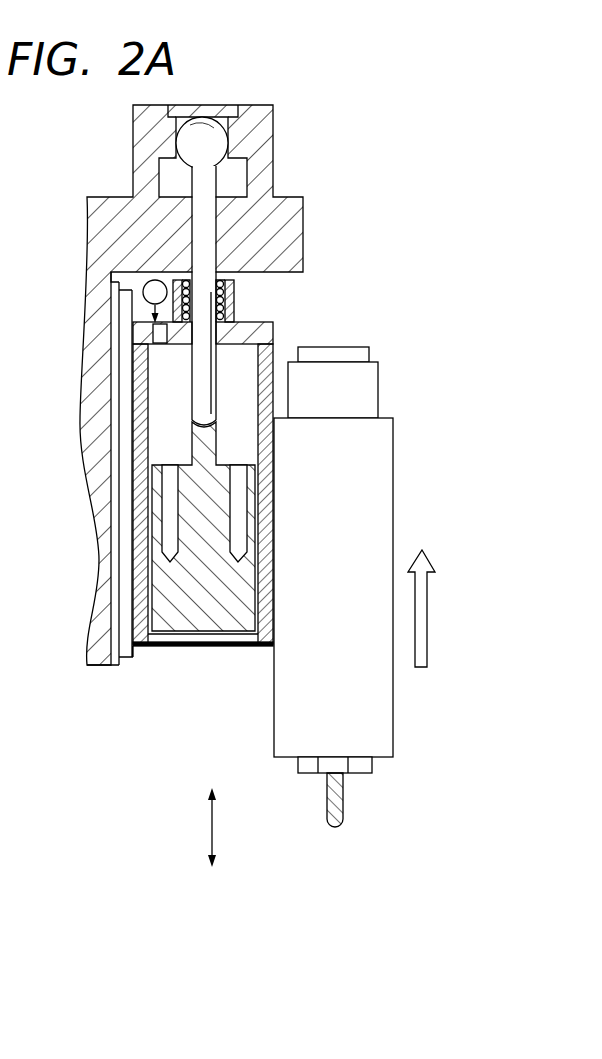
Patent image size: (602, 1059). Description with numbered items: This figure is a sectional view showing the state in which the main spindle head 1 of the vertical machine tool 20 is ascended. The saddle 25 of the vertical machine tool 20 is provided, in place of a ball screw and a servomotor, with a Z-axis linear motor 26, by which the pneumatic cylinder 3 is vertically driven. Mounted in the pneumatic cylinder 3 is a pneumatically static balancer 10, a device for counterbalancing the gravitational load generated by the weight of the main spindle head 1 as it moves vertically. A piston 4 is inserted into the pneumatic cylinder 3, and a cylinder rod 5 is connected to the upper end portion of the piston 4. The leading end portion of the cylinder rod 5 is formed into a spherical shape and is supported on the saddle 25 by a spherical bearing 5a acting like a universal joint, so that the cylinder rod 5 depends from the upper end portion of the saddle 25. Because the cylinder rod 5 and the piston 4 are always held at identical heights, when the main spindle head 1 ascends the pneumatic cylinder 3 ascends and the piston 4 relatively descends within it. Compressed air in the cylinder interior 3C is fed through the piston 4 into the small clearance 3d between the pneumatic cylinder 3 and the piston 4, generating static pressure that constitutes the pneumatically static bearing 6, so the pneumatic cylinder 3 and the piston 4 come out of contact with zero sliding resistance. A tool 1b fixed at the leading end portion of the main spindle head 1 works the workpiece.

The pneumatically static balancer 10 is at (312, 96).
The vertical machine tool 20 is at (247, 94).
The saddle 25 is at (288, 222).
The spherical bearing 5a is at (216, 147).
The cylinder rod 5 is at (208, 185).
The pneumatic cylinder 3 is at (254, 322).
The cylinder interior 3C is at (250, 368).
The small clearance 3d is at (273, 525).
The pneumatically static bearing 6 is at (274, 483).
The piston 4 is at (197, 610).
The Z-axis linear motor 26 is at (128, 650).
The main spindle head 1 is at (375, 446).
The tool 1b is at (344, 816).